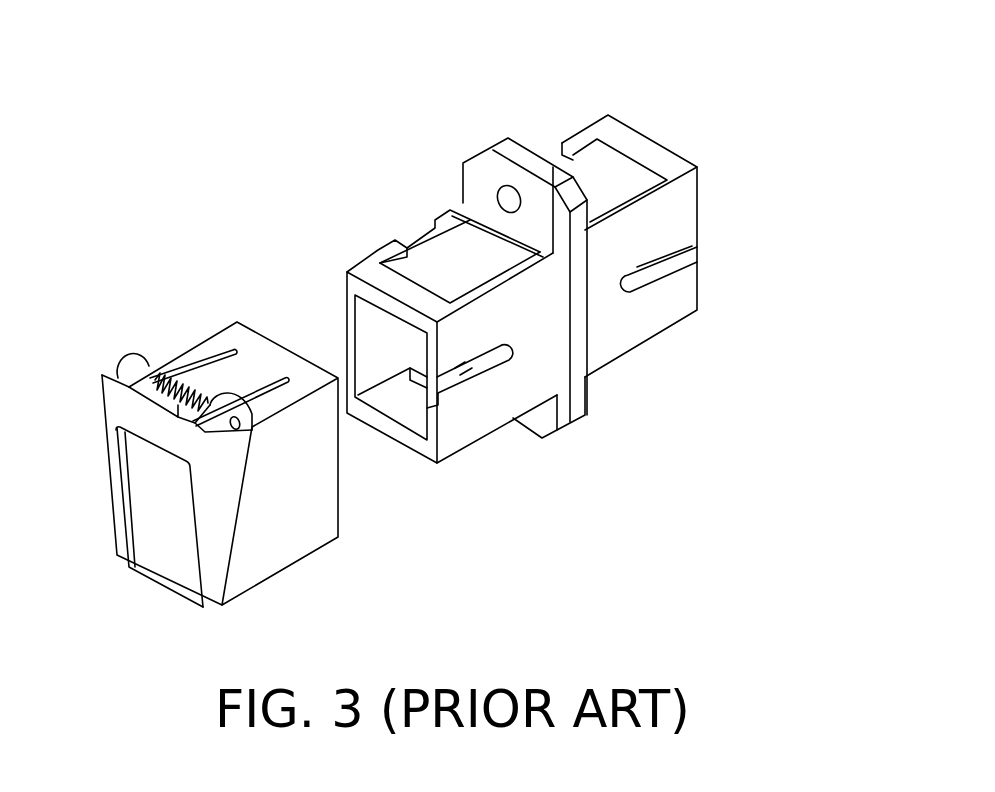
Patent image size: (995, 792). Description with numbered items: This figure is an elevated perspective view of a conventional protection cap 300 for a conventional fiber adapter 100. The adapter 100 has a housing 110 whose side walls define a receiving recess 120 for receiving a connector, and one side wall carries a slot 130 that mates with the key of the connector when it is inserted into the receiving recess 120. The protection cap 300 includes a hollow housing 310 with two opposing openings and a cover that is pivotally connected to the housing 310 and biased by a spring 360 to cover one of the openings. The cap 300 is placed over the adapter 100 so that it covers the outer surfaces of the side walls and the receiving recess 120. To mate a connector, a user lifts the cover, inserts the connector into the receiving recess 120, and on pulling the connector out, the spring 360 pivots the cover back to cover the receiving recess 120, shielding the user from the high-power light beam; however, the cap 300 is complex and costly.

The fiber adapter 100 is at (617, 98).
The housing 110 is at (377, 243).
The receiving recess 120 is at (410, 392).
The slot 130 is at (452, 373).
The protection cap 300 is at (223, 257).
The hollow housing 310 is at (222, 342).
The spring 360 is at (178, 380).